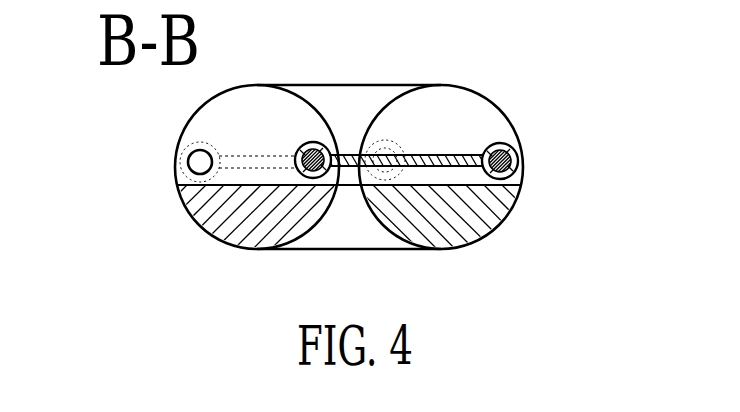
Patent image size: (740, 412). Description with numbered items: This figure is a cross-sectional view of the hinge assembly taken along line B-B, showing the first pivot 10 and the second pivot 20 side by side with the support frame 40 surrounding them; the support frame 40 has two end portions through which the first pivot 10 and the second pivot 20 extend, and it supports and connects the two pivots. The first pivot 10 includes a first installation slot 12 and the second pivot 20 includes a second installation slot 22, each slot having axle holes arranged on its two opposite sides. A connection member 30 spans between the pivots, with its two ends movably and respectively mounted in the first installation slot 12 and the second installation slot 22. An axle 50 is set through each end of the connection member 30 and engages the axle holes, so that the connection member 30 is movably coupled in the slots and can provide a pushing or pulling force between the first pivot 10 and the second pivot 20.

The first pivot 10 is at (179, 201).
The first installation slot 12 is at (265, 123).
The second pivot 20 is at (518, 199).
The second installation slot 22 is at (446, 123).
The connection member 30 is at (263, 158).
The support frame 40 is at (348, 107).
The axle 50 is at (313, 142).